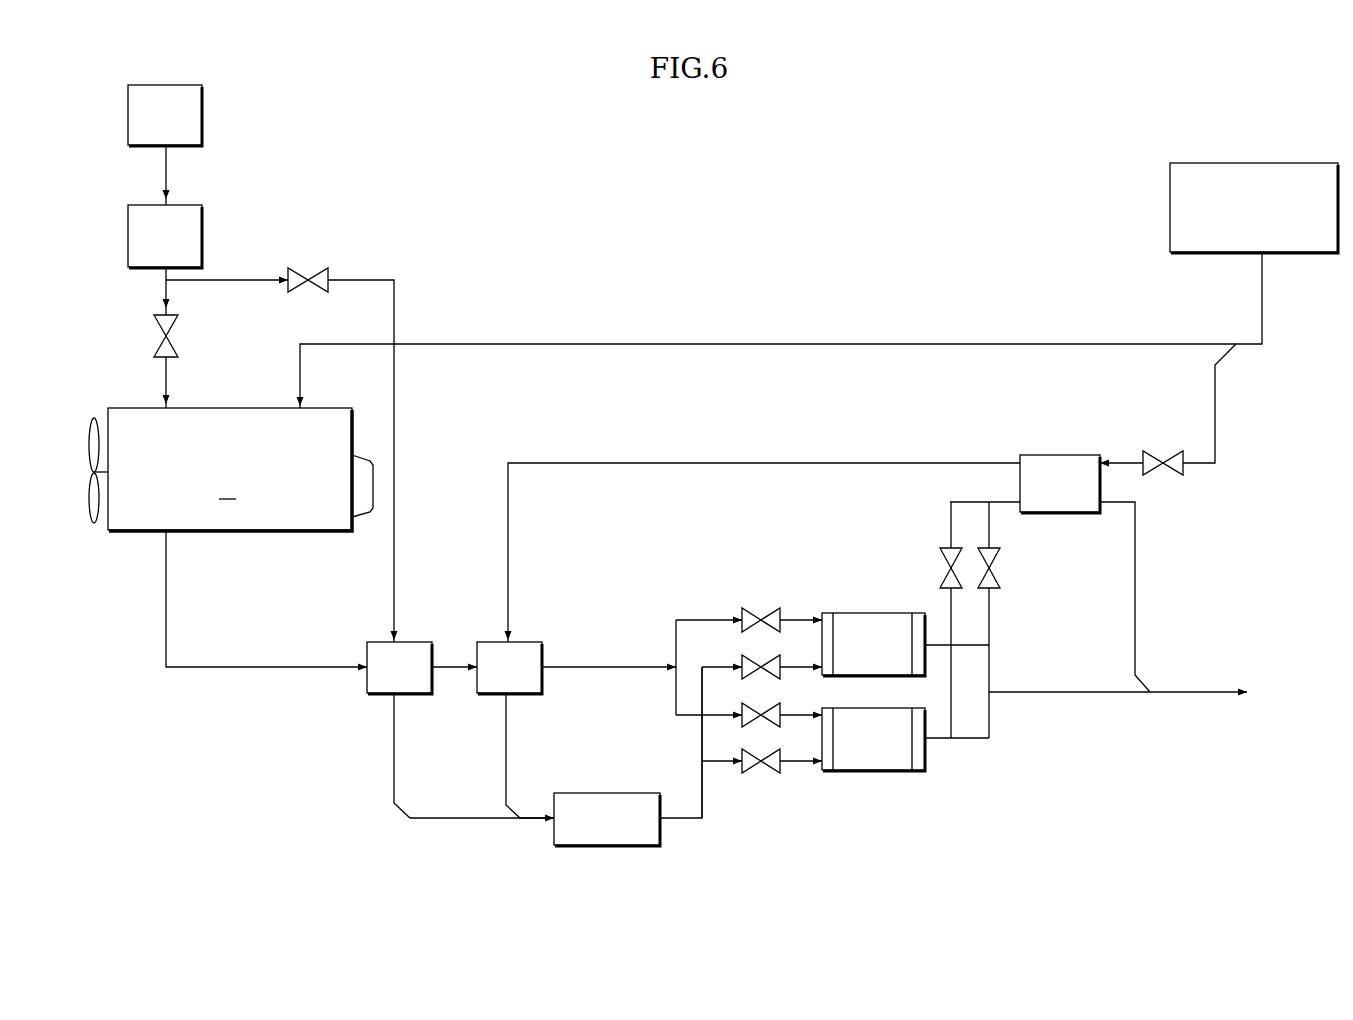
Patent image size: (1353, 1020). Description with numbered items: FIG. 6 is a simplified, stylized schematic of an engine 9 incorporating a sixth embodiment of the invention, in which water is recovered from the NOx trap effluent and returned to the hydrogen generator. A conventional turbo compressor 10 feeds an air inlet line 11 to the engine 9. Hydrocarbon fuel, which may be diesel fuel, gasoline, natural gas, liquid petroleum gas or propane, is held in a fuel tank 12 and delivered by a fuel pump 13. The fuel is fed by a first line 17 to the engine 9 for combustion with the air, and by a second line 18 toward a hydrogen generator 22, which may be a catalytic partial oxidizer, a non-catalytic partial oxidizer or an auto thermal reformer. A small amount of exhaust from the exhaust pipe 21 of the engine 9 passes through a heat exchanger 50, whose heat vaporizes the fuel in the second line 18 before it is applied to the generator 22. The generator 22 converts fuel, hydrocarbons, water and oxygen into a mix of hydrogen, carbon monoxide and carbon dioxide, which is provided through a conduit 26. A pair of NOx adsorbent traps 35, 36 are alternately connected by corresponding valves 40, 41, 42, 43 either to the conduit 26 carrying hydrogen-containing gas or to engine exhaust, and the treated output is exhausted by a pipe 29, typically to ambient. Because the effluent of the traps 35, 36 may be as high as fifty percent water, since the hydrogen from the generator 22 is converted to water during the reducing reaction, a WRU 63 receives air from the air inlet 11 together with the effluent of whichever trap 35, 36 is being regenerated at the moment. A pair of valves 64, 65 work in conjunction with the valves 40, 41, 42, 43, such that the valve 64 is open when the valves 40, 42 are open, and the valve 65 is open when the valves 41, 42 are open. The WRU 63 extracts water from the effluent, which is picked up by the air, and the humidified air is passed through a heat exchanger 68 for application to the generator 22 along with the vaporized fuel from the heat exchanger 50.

The engine 9 is at (231, 469).
The turbo compressor 10 is at (1258, 163).
The air inlet line 11 is at (718, 344).
The hydrocarbon fuel tank 12 is at (160, 84).
The fuel pump 13 is at (150, 205).
The first line 17 is at (165, 372).
The second line 18 is at (394, 420).
The exhaust pipe 21 is at (242, 667).
The hydrogen generator 22 is at (610, 793).
The conduit 26 is at (702, 787).
The pipe 29 is at (1172, 692).
The NOx adsorbent trap 35 is at (867, 613).
The NOx adsorbent trap 36 is at (867, 708).
The valve 40 is at (771, 610).
The valve 41 is at (771, 657).
The valve 42 is at (771, 705).
The valve 43 is at (771, 751).
The heat exchanger 50 is at (378, 642).
The WRU 63 is at (1060, 455).
The valve 64 is at (942, 568).
The valve 65 is at (997, 568).
The heat exchanger 68 is at (488, 642).